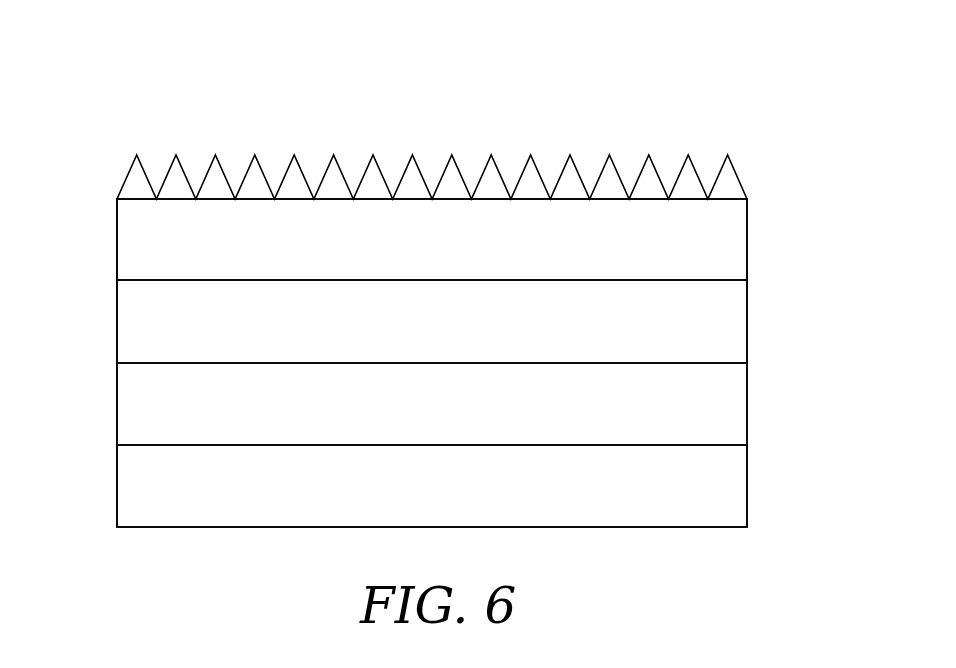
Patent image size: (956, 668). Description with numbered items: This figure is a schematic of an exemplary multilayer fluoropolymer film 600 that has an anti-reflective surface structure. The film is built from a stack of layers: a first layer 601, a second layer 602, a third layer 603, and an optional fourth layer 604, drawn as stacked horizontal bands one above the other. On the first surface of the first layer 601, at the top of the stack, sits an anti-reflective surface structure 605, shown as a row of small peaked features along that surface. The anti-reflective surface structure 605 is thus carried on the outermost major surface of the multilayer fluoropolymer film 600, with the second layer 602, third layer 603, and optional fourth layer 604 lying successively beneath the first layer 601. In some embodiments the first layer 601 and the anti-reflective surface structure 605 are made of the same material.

The multilayer fluoropolymer film 600 is at (692, 73).
The first layer 601 is at (731, 240).
The second layer 602 is at (731, 321).
The third layer 603 is at (731, 401).
The optional fourth layer 604 is at (731, 483).
The anti-reflective surface structure 605 is at (112, 172).